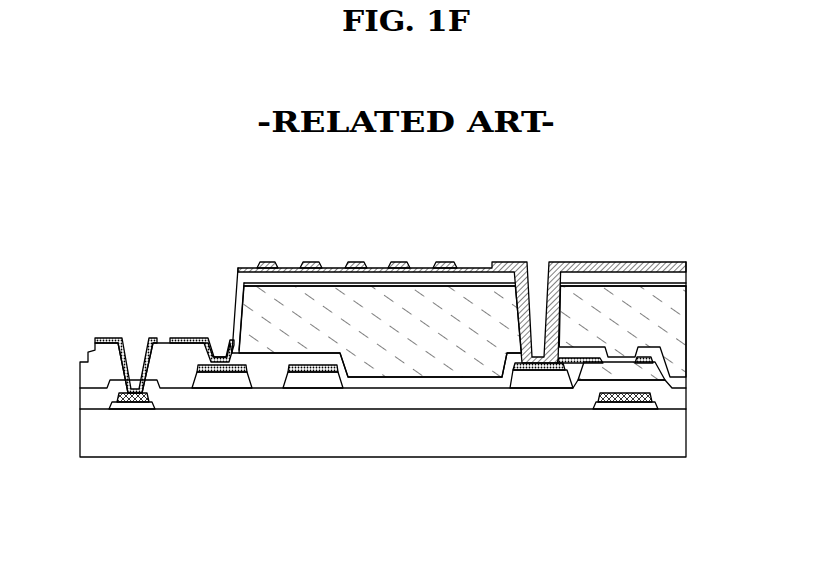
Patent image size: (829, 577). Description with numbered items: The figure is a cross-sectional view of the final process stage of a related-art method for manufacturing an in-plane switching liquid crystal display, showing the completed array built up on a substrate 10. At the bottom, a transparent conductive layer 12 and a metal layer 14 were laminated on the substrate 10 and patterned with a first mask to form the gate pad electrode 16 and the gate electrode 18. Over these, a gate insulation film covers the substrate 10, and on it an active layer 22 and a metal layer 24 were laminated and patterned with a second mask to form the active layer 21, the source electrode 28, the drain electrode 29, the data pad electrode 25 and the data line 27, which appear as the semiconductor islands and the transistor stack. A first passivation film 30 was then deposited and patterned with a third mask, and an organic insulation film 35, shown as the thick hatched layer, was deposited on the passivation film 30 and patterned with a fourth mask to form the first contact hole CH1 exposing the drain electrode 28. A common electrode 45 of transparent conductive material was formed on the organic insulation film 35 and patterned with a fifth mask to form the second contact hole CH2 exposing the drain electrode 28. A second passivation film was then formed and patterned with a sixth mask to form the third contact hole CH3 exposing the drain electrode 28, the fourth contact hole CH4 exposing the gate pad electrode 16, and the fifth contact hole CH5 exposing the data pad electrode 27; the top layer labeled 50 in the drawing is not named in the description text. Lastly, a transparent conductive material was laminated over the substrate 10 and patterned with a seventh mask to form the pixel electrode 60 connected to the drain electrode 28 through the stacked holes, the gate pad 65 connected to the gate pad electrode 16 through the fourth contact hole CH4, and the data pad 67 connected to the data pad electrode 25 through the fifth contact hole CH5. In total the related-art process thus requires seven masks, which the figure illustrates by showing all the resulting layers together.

The substrate 10 is at (678, 432).
The transparent conductive layer 12 is at (142, 406).
The metal layer 14 is at (124, 404).
The gate pad electrode 16 is at (156, 494).
The gate electrode 18 is at (593, 494).
The active layer 21 is at (527, 389).
The active layer 22 is at (205, 381).
The metal layer 24 is at (235, 383).
The data pad electrode 25 is at (193, 494).
The data line 27 is at (283, 494).
The drain electrode 28 is at (553, 389).
The drain electrode 29 is at (652, 357).
The first passivation film 30 is at (677, 379).
The organic insulation film 35 is at (677, 330).
The common electrode 45 is at (677, 282).
The common electrode 50 is at (652, 267).
The pixel electrode 60 is at (357, 265).
The gate pad 65 is at (107, 338).
The data pad 67 is at (185, 338).
The first contact hole CH1 is at (518, 312).
The second contact hole CH2 is at (538, 283).
The third contact hole CH3 is at (538, 282).
The fourth contact hole CH4 is at (130, 323).
The fifth contact hole CH5 is at (217, 322).